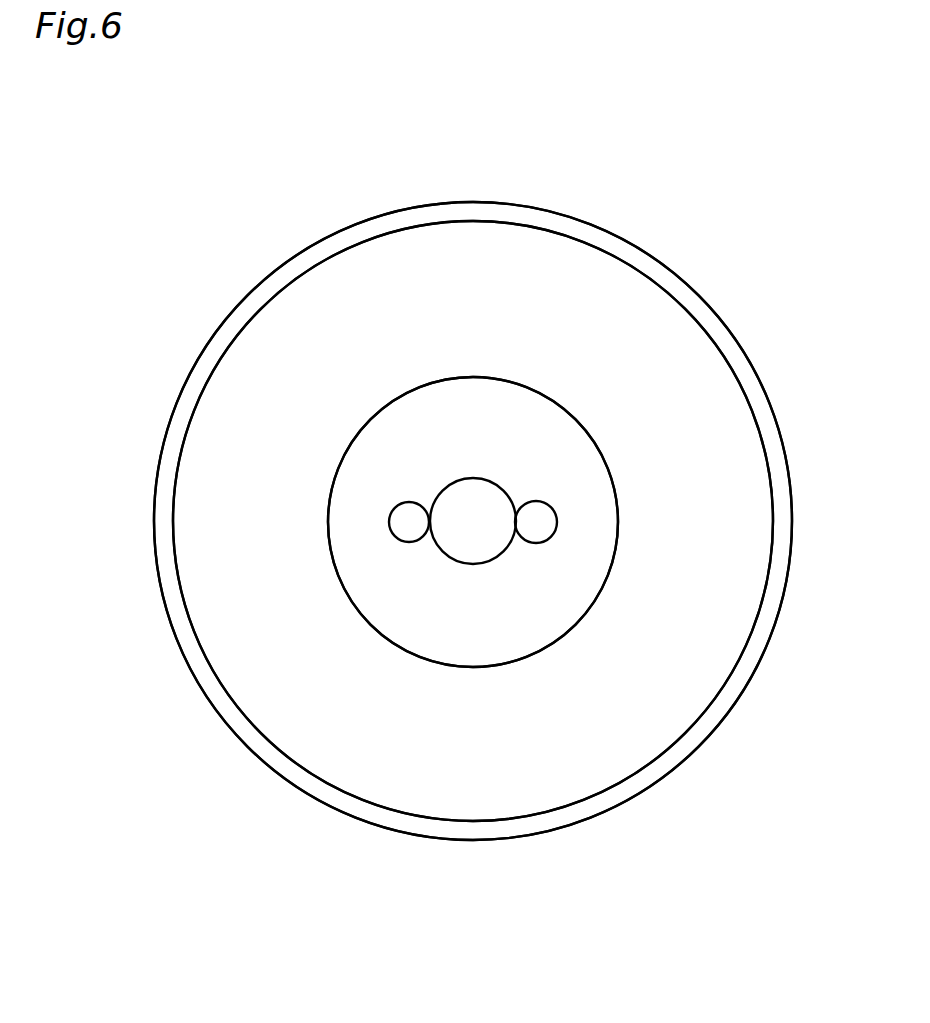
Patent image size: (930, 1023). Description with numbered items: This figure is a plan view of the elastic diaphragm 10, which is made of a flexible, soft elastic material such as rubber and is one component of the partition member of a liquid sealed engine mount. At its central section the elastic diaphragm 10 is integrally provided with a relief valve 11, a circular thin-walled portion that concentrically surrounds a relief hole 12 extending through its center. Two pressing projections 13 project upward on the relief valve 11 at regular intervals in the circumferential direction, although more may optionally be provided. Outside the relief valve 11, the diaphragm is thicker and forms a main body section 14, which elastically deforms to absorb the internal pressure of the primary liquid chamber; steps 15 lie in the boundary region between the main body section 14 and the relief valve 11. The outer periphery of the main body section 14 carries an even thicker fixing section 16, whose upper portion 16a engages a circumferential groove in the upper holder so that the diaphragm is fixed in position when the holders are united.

The elastic diaphragm 10 is at (642, 243).
The relief valve 11 is at (425, 622).
The relief hole 12 is at (490, 497).
The pressing projections 13 is at (403, 527).
The main body section 14 is at (235, 420).
The steps 15 is at (403, 393).
The fixing section 16 is at (372, 218).
The upper portion of the fixing section 16a is at (410, 215).